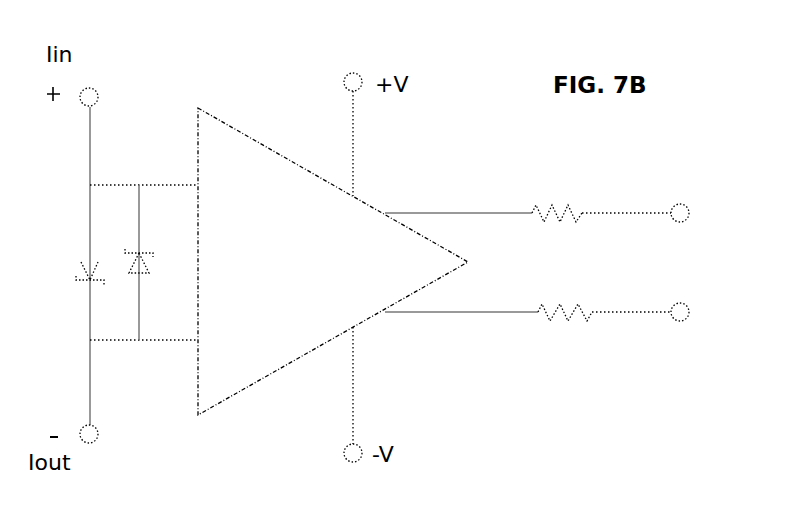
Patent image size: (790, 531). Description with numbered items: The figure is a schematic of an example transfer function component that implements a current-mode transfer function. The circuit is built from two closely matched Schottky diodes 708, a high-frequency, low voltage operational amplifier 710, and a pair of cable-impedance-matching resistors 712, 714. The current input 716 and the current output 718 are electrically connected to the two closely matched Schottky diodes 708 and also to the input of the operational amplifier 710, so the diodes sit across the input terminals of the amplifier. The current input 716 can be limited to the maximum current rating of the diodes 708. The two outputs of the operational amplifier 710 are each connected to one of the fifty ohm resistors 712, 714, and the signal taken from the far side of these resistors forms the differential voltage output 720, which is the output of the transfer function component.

The closely matched Schottky diodes 708 is at (92, 233).
The high-frequency, low voltage operational amplifier 710 is at (235, 128).
The cable-impedance-matching resistor 712 is at (553, 204).
The cable-impedance-matching resistor 714 is at (560, 302).
The current input 716 is at (92, 88).
The current output 718 is at (93, 442).
The differential voltage output 720 is at (695, 250).